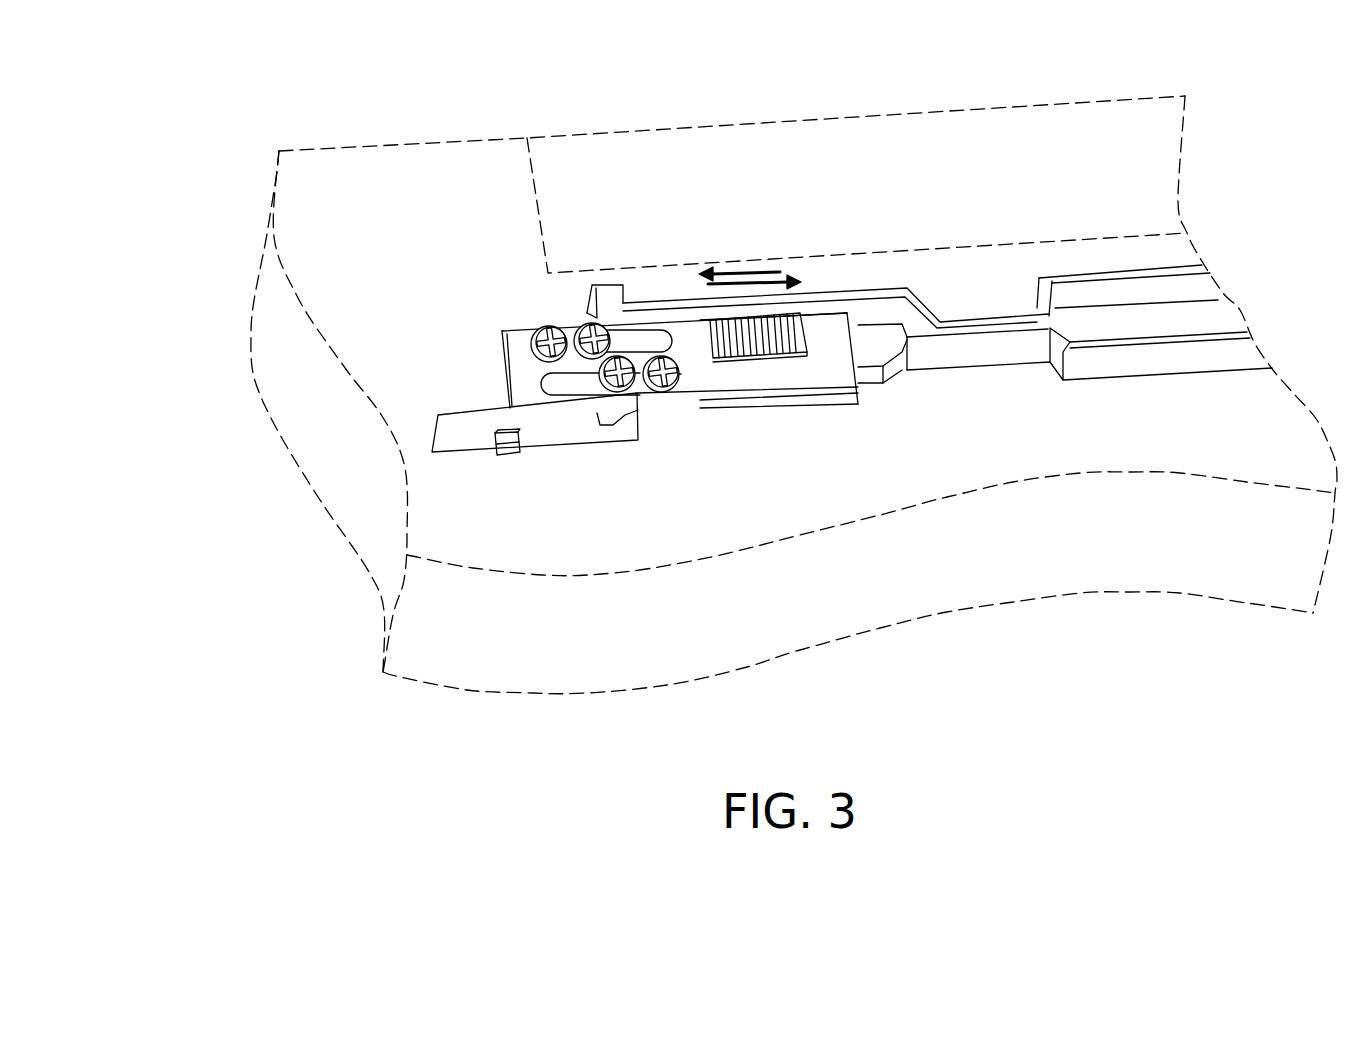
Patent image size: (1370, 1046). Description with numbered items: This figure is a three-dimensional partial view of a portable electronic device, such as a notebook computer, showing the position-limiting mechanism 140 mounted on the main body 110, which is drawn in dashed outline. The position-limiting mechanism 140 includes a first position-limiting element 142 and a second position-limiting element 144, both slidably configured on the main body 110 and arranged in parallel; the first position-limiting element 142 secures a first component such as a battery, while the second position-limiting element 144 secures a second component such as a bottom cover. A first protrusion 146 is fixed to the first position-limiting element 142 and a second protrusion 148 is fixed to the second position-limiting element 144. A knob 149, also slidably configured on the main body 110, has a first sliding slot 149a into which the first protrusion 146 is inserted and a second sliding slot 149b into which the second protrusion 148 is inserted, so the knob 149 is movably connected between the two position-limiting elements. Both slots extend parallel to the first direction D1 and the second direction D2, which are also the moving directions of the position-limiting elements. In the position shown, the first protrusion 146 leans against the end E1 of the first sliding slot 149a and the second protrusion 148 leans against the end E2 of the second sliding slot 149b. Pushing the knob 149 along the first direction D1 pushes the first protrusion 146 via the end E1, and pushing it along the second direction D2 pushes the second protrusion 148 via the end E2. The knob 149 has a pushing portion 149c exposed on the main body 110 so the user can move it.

The main body 110 is at (306, 151).
The position-limiting mechanism 140 is at (490, 368).
The first position-limiting element 142 is at (1197, 288).
The second position-limiting element 144 is at (462, 446).
The first protrusion 146 is at (540, 330).
The second protrusion 148 is at (665, 388).
The knob 149 is at (730, 404).
The first sliding slot 149a is at (633, 348).
The second sliding slot 149b is at (575, 372).
The pushing portion 149c is at (795, 348).
The end of the first sliding slot E1 is at (518, 350).
The end of the second sliding slot E2 is at (699, 367).
The first direction D1 is at (780, 275).
The second direction D2 is at (738, 272).